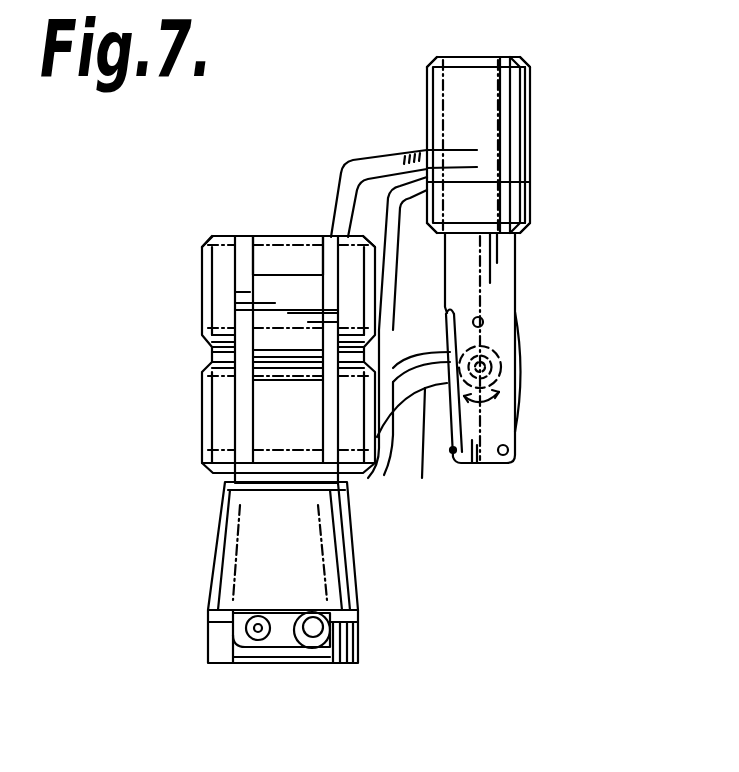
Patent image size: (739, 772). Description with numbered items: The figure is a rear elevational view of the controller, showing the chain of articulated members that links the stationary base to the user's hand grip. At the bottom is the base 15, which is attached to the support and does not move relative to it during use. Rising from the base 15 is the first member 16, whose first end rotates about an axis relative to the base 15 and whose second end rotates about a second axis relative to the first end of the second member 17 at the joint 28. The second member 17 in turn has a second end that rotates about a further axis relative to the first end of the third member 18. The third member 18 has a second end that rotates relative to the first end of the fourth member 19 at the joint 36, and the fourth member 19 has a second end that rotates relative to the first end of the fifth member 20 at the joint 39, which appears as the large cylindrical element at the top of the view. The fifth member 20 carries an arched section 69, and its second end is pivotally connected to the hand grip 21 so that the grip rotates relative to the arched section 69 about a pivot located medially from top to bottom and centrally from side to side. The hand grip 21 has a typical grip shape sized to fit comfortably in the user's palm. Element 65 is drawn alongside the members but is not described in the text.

The base 15 is at (208, 651).
The first member 16 is at (215, 552).
The second member 17 is at (276, 450).
The third member 18 is at (278, 237).
The fourth member 19 is at (388, 156).
The fifth member 20 is at (386, 447).
The hand grip 21 is at (516, 268).
The joint 28 is at (203, 428).
The joint 36 is at (203, 290).
The joint 39 is at (474, 57).
The lower arm 65 is at (398, 236).
The arched section 69 is at (422, 478).